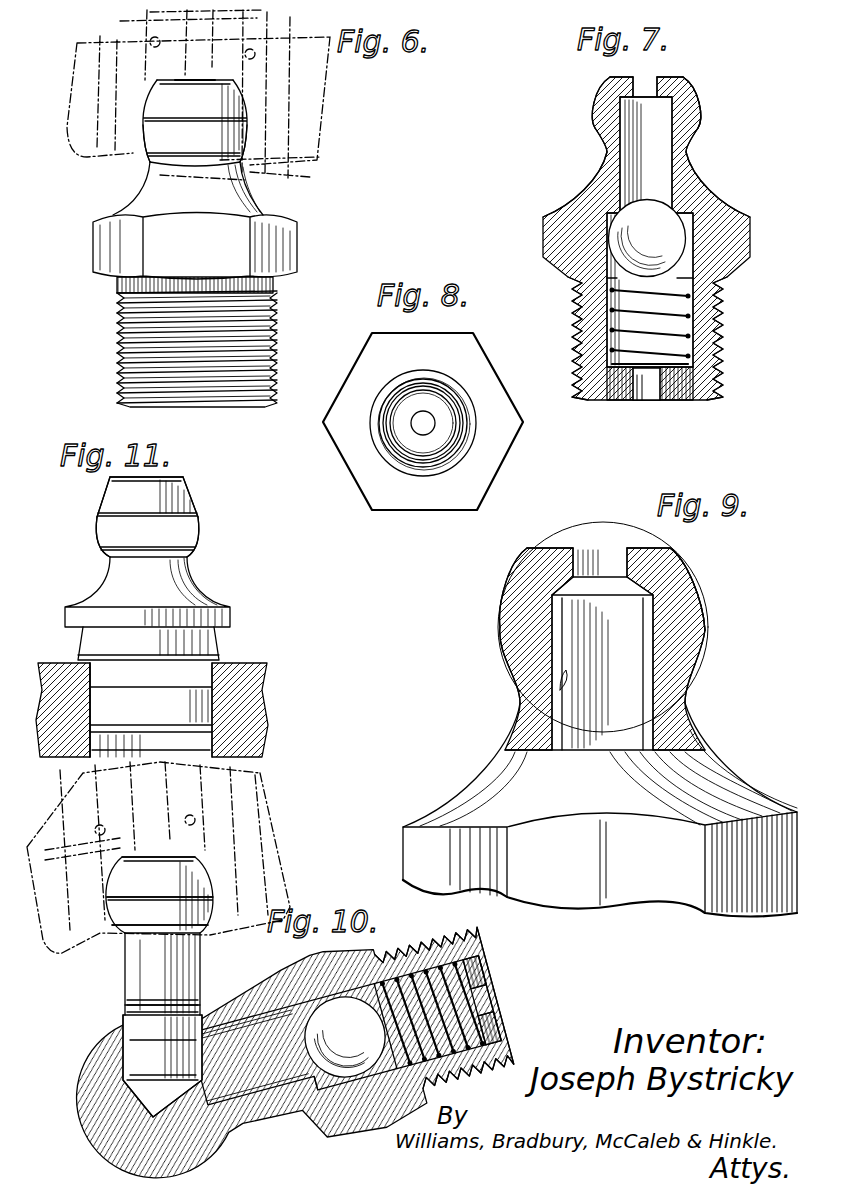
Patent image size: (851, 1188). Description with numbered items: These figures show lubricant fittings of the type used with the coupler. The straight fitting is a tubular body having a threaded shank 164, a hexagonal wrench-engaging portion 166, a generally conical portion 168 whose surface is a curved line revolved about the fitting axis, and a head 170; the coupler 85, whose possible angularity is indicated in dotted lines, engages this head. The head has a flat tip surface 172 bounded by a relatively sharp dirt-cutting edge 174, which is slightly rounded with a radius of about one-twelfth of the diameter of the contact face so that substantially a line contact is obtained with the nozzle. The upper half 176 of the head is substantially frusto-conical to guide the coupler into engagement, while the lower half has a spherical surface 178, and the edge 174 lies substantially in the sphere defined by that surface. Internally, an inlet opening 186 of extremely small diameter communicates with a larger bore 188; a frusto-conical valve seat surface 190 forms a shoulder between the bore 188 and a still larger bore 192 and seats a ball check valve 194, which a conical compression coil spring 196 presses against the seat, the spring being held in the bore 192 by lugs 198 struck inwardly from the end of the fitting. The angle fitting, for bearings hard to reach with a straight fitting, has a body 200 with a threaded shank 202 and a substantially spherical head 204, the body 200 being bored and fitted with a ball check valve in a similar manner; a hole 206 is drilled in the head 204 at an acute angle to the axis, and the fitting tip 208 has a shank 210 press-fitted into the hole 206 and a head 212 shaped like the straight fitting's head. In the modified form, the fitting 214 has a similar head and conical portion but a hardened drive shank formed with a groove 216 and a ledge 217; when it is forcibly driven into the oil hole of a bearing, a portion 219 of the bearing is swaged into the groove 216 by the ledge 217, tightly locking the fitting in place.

In FIG. 6, the coupler (phantom) 85 is at (335, 80).
In FIG. 10, the coupler (phantom) 85 is at (286, 826).
In FIG. 6, the threaded shank 164 is at (273, 322).
In FIG. 7, the threaded shank 164 is at (572, 312).
In FIG. 6, the hexagonal wrench-engaging portion 166 is at (285, 247).
In FIG. 7, the hexagonal wrench-engaging portion 166 is at (543, 250).
In FIG. 8, the hexagonal wrench-engaging portion 166 is at (363, 506).
In FIG. 9, the hexagonal wrench-engaging portion 166 is at (430, 860).
In FIG. 6, the generally conical portion 168 is at (263, 195).
In FIG. 7, the generally conical portion 168 is at (590, 190).
In FIG. 8, the generally conical portion 168 is at (437, 485).
In FIG. 9, the generally conical portion 168 is at (487, 786).
In FIG. 6, the head 170 is at (160, 138).
In FIG. 7, the head 170 is at (593, 124).
In FIG. 8, the head 170 is at (395, 424).
In FIG. 9, the head 170 is at (503, 638).
In FIG. 11, the head 170 is at (197, 530).
In FIG. 10, the head 170 is at (117, 928).
In FIG. 6, the flat tip surface 172 is at (170, 79).
In FIG. 7, the flat tip surface 172 is at (610, 78).
In FIG. 8, the flat tip surface 172 is at (437, 405).
In FIG. 9, the flat tip surface 172 is at (553, 547).
In FIG. 11, the flat tip surface 172 is at (170, 477).
In FIG. 10, the flat tip surface 172 is at (192, 858).
In FIG. 6, the dirt-cutting edge 174 is at (180, 85).
In FIG. 8, the dirt-cutting edge 174 is at (447, 416).
In FIG. 9, the dirt-cutting edge 174 is at (522, 552).
In FIG. 11, the dirt-cutting edge 174 is at (105, 480).
In FIG. 6, the upper half of the head 176 is at (197, 108).
In FIG. 7, the upper half of the head 176 is at (698, 98).
In FIG. 8, the upper half of the head 176 is at (382, 440).
In FIG. 9, the upper half of the head 176 is at (697, 588).
In FIG. 11, the upper half of the head 176 is at (192, 500).
In FIG. 10, the upper half of the head 176 is at (135, 884).
In FIG. 6, the spherical surface 178 is at (243, 135).
In FIG. 7, the spherical surface 178 is at (700, 143).
In FIG. 9, the spherical surface 178 is at (697, 668).
In FIG. 11, the spherical surface 178 is at (100, 547).
In FIG. 7, the inlet opening 186 is at (655, 79).
In FIG. 8, the inlet opening 186 is at (435, 423).
In FIG. 9, the inlet opening 186 is at (611, 552).
In FIG. 7, the bore 188 is at (665, 178).
In FIG. 9, the bore 188 is at (567, 678).
In FIG. 7, the frusto-conical valve seat surface 190 is at (690, 212).
In FIG. 7, the bore 192 is at (695, 293).
In FIG. 7, the ball check valve 194 is at (670, 240).
In FIG. 10, the ball check valve 194 is at (357, 1076).
In FIG. 7, the conical compression coil spring 196 is at (700, 332).
In FIG. 10, the conical compression coil spring 196 is at (482, 982).
In FIG. 7, the lugs 198 is at (700, 375).
In FIG. 10, the lugs 198 is at (496, 1022).
In FIG. 10, the body 200 is at (270, 1128).
In FIG. 10, the threaded shank 202 is at (428, 946).
In FIG. 10, the substantially spherical head 204 is at (112, 1145).
In FIG. 10, the hole 206 is at (127, 1037).
In FIG. 10, the fitting tip 208 is at (207, 970).
In FIG. 10, the shank 210 is at (153, 1057).
In FIG. 10, the head 212 is at (203, 918).
In FIG. 11, the fitting 214 is at (215, 578).
In FIG. 11, the groove 216 is at (237, 665).
In FIG. 11, the ledge 217 is at (215, 657).
In FIG. 11, the portion of the bearing 219 is at (88, 675).